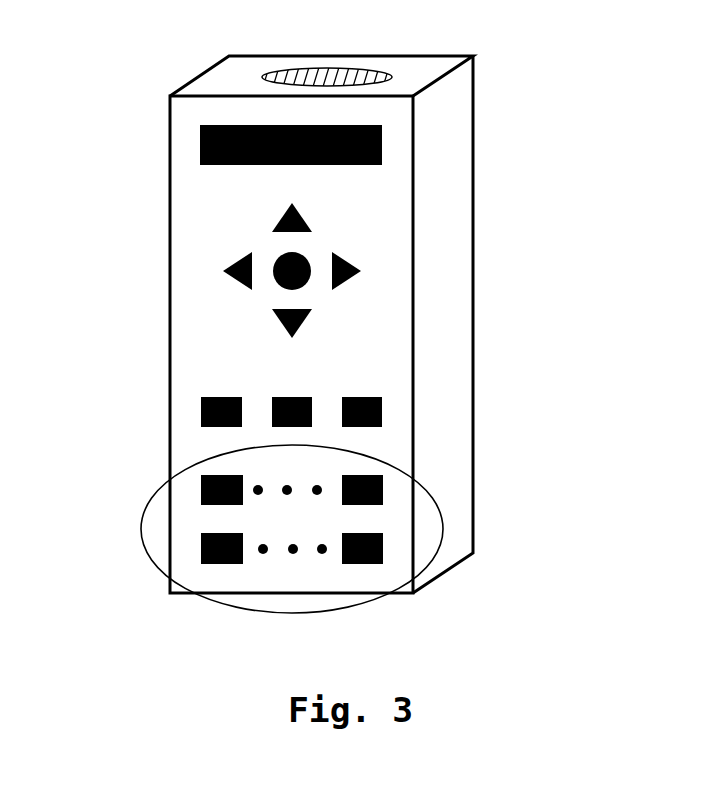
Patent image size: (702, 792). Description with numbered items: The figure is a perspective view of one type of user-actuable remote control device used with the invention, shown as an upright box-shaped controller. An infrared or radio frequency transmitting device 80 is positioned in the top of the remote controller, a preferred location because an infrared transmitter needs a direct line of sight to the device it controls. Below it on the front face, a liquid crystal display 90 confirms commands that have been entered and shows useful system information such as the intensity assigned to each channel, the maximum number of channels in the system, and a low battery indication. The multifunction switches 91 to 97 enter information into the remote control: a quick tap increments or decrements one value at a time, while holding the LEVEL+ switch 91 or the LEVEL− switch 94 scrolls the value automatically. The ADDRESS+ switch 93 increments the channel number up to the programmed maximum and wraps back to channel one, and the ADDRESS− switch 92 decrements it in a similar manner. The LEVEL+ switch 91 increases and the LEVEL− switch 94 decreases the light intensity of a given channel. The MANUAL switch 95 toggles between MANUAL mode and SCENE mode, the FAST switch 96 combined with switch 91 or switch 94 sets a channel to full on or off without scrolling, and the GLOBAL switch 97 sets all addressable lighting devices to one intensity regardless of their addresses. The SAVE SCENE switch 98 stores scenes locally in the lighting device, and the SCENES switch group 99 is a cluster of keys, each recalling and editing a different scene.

The transmitting device 80 is at (367, 73).
The liquid crystal display 90 is at (382, 133).
The LEVEL+ switch 91 is at (303, 212).
The ADDRESS− switch 92 is at (223, 271).
The ADDRESS+ switch 93 is at (358, 270).
The LEVEL− switch 94 is at (298, 333).
The MANUAL switch 95 is at (280, 397).
The FAST switch 96 is at (201, 427).
The GLOBAL switch 97 is at (382, 410).
The SAVE SCENE switch 98 is at (280, 283).
The SCENES switch group 99 is at (158, 567).